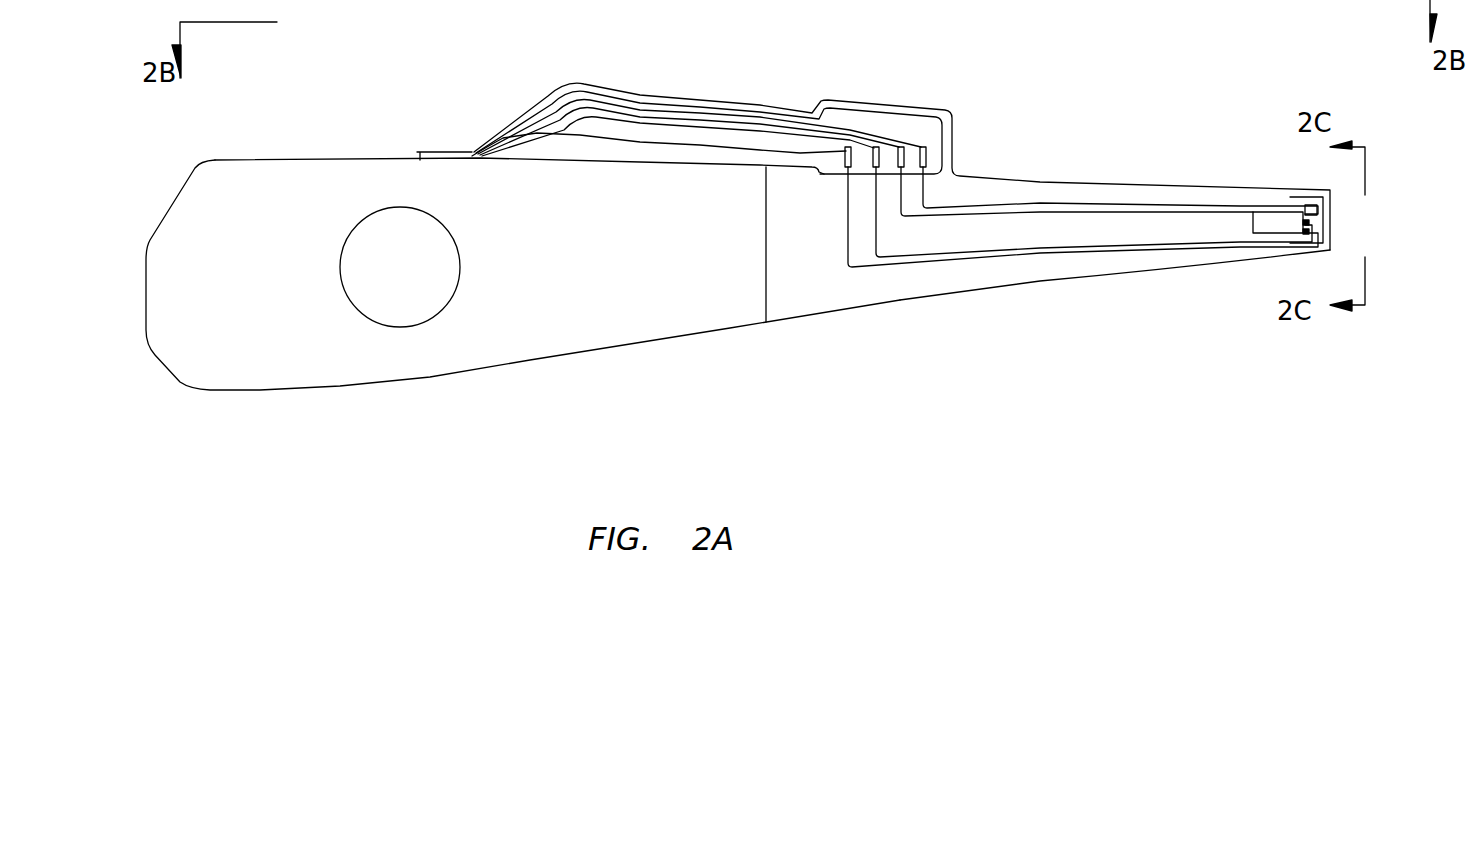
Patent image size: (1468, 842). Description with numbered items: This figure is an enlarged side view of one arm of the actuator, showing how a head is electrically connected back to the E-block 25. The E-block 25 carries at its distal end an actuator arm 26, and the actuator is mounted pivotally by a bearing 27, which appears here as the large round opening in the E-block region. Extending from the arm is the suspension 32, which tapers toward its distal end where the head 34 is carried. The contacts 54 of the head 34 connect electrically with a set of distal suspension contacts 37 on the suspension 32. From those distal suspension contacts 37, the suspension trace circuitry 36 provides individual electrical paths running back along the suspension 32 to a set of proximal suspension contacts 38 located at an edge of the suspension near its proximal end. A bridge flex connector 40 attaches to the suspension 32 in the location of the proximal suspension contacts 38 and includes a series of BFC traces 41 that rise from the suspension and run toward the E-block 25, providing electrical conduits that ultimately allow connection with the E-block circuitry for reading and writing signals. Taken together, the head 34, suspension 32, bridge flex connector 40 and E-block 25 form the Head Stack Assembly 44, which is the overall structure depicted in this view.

The E-block 25 is at (738, 289).
The actuator arm 26 is at (634, 322).
The bearing 27 is at (462, 250).
The suspension 32 is at (896, 290).
The head 34 is at (1278, 222).
The suspension trace circuitry 36 is at (1070, 210).
The distal suspension contacts 37 is at (1309, 223).
The proximal suspension contacts 38 is at (843, 156).
The bridge flex connector 40 is at (780, 111).
The BFC traces 41 is at (590, 82).
The Head Stack Assembly 44 is at (995, 303).
The contacts of the head 54 is at (1316, 205).